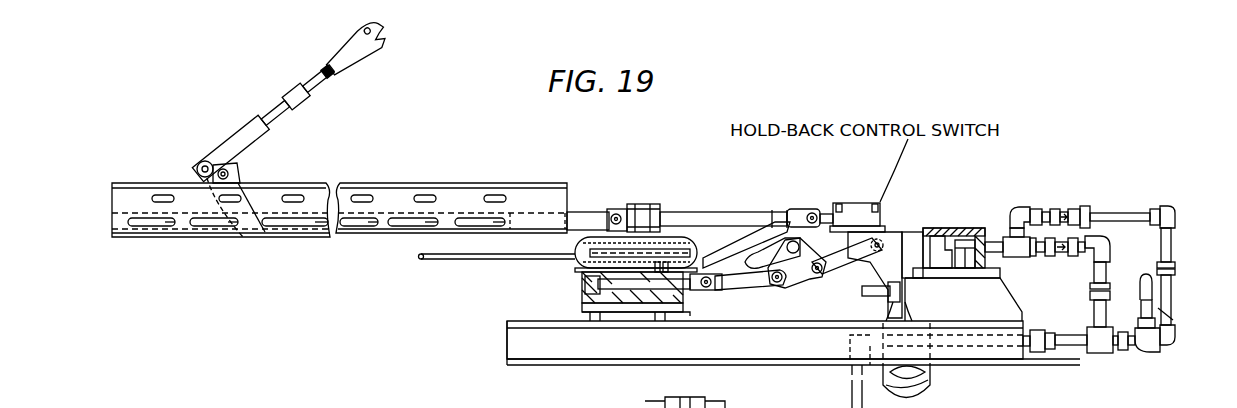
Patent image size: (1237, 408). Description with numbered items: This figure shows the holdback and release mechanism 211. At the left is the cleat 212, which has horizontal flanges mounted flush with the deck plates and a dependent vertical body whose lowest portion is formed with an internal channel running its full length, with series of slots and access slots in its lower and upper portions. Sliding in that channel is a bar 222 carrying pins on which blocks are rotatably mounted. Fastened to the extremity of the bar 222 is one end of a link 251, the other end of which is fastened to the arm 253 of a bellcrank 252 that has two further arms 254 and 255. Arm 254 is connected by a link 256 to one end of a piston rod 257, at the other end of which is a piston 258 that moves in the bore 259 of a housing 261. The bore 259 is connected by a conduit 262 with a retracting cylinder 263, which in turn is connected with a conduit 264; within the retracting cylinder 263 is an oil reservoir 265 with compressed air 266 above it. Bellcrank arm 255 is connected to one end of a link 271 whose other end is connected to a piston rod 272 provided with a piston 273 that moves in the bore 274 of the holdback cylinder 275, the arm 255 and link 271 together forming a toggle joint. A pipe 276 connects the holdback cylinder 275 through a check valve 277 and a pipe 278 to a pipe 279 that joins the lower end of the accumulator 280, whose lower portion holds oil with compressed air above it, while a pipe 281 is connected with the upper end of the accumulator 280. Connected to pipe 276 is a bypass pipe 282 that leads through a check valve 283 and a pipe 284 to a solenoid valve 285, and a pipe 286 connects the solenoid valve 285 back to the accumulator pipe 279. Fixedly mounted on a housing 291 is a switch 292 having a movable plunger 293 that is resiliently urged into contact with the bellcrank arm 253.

The holdback and release mechanism 211 is at (610, 206).
The cleat 212 is at (528, 196).
The bar 222 is at (585, 222).
The link 251 is at (745, 224).
The bellcrank 252 is at (796, 262).
The arm 253 is at (803, 216).
The arm 254 is at (779, 283).
The arm 255 is at (780, 246).
The link 256 is at (752, 286).
The piston rod 257 is at (672, 303).
The piston 258 is at (584, 284).
The bore 259 is at (620, 303).
The housing 261 is at (640, 303).
The conduit 262 is at (700, 253).
The retracting cylinder 263 is at (574, 266).
The conduit 264 is at (518, 254).
The oil reservoir 265 is at (667, 253).
The compressed air 266 is at (622, 247).
The link 271 is at (833, 255).
The piston rod 272 is at (910, 240).
The piston 273 is at (947, 246).
The bore 274 is at (965, 256).
The holdback cylinder 275 is at (930, 236).
The pipe 276 is at (994, 244).
The check valve 277 is at (1066, 261).
The pipe 278 is at (1104, 270).
The pipe 279 is at (1075, 346).
The accumulator 280 is at (920, 400).
The pipe 281 is at (868, 290).
The bypass pipe 282 is at (1021, 214).
The check valve 283 is at (1050, 218).
The pipe 284 is at (1118, 220).
The solenoid valve 285 is at (1146, 296).
The pipe 286 is at (1130, 348).
The housing 291 is at (868, 240).
The switch 292 is at (852, 203).
The plunger 293 is at (822, 213).